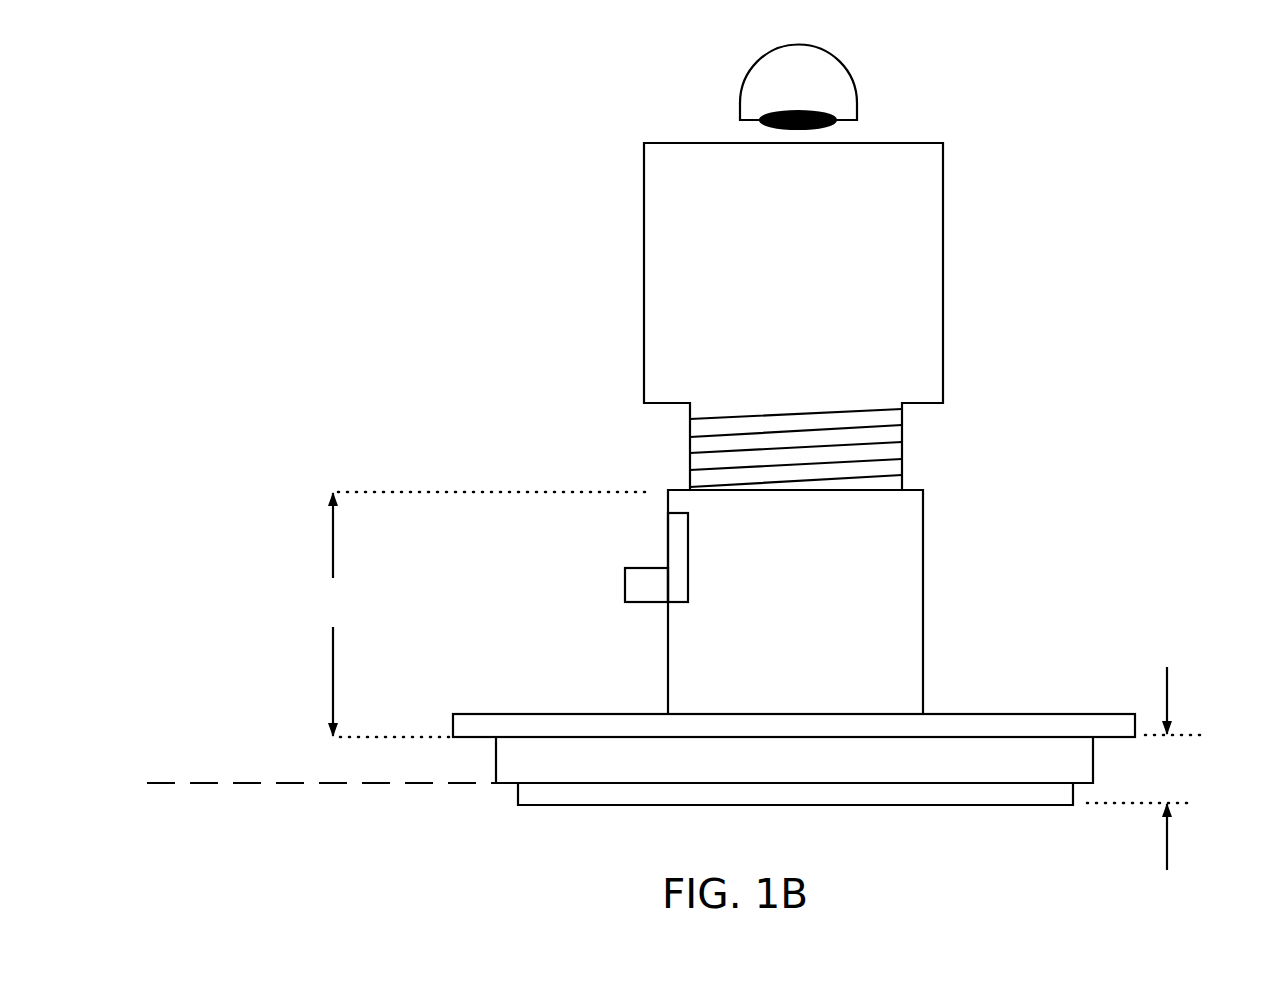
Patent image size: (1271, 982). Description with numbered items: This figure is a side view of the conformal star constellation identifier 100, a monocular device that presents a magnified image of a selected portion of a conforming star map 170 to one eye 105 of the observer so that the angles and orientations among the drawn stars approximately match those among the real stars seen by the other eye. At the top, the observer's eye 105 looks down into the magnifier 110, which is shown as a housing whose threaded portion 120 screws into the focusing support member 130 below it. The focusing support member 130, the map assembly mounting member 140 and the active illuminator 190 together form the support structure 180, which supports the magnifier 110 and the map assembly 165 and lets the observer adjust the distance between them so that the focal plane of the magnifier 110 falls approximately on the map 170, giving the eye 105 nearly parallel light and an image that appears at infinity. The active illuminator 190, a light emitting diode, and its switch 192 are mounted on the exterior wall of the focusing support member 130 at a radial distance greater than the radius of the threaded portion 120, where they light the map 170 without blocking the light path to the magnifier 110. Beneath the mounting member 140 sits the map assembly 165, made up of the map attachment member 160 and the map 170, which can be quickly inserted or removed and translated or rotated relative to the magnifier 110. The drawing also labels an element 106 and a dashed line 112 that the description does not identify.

The conformal star constellation identifier 100 is at (582, 338).
The observer's eye 105 is at (850, 78).
The housing region 106 is at (1090, 163).
The magnifier 110 is at (943, 333).
The threaded portion 120 is at (903, 463).
The focusing support member 130 is at (923, 640).
The map assembly mounting member 140 is at (1104, 714).
The map attachment member 160 is at (497, 758).
The conforming star map 170 is at (1040, 807).
The support structure 180 is at (484, 614).
The map assembly 165 is at (1143, 768).
The active illuminator 190 is at (668, 546).
The switch 192 is at (613, 586).
The reference plane 112 is at (237, 782).